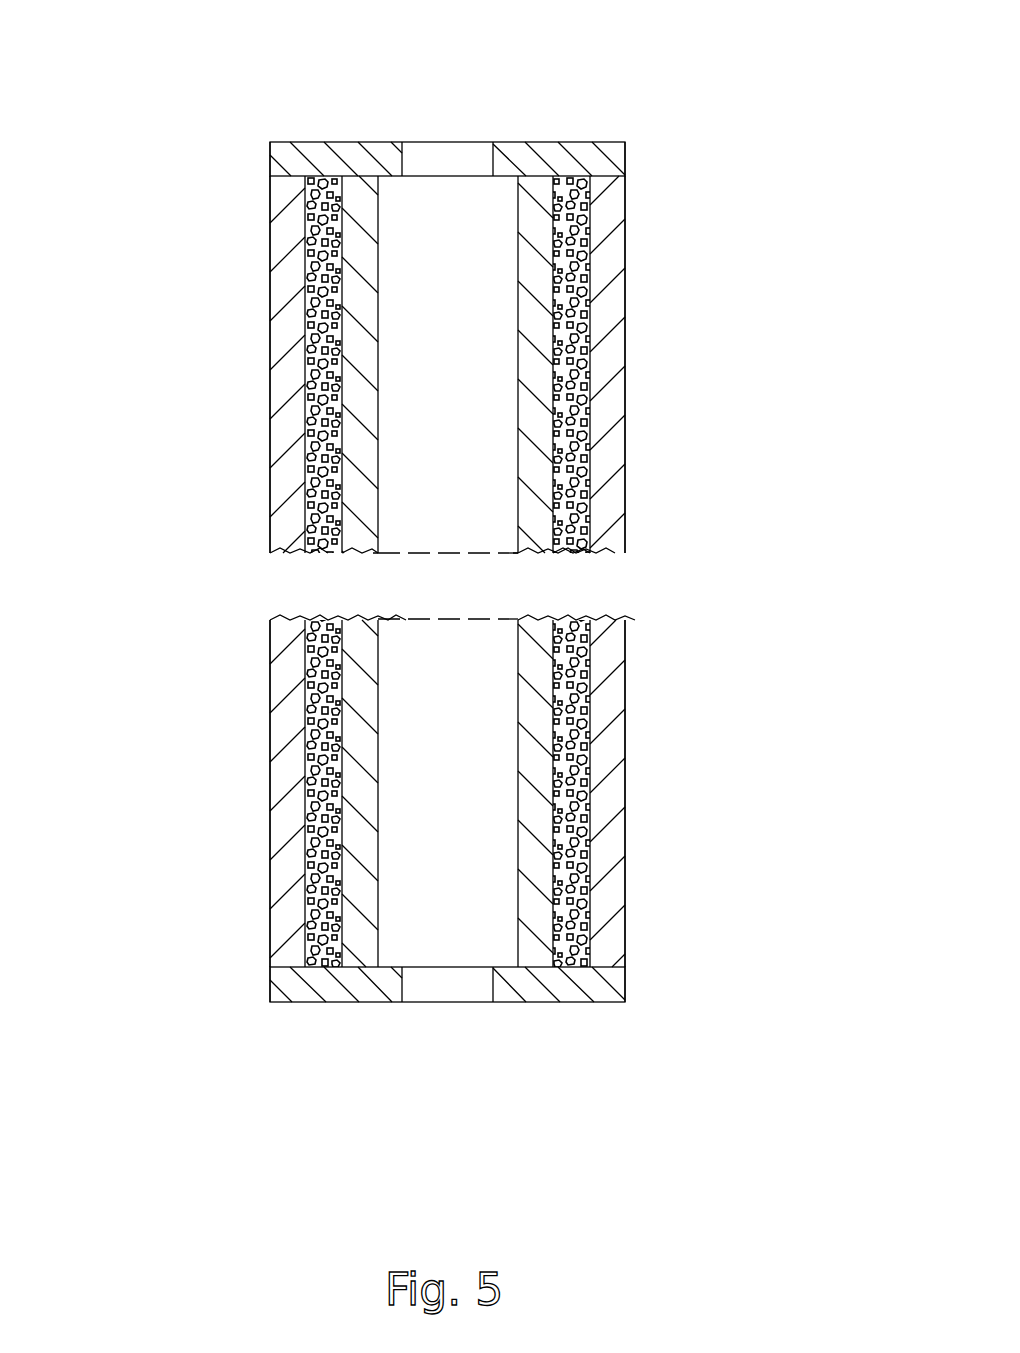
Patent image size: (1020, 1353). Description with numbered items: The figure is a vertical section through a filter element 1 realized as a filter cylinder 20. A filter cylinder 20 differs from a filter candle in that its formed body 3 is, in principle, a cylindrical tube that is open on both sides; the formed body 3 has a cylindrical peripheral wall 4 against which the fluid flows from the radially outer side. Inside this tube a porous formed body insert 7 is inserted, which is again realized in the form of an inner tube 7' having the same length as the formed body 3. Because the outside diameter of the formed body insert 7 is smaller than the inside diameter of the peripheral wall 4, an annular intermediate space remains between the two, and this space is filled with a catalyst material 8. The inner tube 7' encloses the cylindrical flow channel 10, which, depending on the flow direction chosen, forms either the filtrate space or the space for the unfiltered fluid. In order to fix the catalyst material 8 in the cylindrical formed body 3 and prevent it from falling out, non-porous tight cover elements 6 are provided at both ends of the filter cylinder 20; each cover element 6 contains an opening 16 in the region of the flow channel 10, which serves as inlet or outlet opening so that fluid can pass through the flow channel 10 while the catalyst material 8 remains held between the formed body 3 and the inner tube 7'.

The filter element 1 is at (647, 284).
The filter cylinder 20 is at (655, 310).
The formed body 3 is at (627, 857).
The cylindrical peripheral wall 4 is at (627, 527).
The cover element 6 is at (610, 143).
The formed body insert 7 is at (225, 571).
The inner tube 7' is at (535, 571).
The catalyst material 8 is at (593, 450).
The flow channel 10 is at (470, 420).
The opening 16 is at (447, 153).